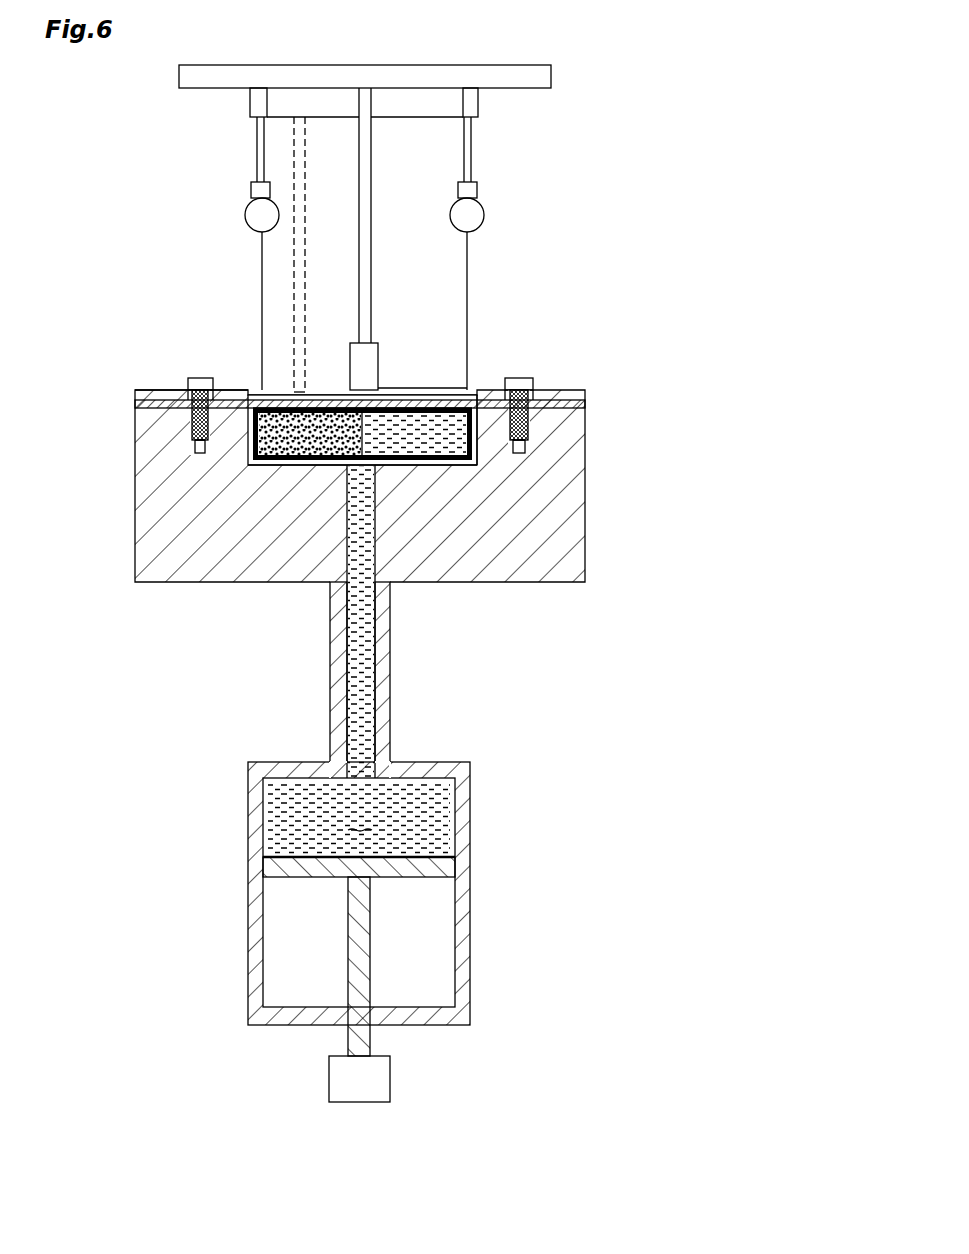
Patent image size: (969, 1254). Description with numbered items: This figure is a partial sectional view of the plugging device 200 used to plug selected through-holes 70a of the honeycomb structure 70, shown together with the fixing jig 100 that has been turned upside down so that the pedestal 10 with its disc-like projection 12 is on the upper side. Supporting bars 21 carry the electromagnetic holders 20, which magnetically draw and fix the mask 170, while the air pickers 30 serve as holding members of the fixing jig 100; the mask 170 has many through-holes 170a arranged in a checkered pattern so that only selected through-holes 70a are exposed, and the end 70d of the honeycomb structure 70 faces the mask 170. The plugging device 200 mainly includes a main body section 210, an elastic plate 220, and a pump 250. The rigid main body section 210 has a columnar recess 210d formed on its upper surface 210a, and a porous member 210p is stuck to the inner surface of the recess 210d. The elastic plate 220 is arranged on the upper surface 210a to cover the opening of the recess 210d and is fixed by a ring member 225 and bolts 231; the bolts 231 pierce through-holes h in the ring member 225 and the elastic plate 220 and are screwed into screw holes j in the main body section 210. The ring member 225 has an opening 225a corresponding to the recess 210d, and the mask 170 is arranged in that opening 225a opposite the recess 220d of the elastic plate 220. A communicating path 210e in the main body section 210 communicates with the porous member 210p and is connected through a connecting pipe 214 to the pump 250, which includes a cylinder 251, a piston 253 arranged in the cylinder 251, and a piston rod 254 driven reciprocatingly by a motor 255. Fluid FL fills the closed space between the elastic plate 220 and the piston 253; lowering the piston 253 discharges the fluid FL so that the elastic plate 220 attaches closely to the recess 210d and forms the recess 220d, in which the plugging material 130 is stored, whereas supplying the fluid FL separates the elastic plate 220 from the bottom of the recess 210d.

The fixing jig 100 is at (597, 222).
The plugging device 200 is at (675, 424).
The pedestal 10 is at (553, 76).
The projection 12 is at (478, 103).
The electromagnetic holder 20 is at (380, 350).
The supporting bar 21 is at (372, 280).
The air picker 30 is at (245, 213).
The honeycomb structure 70 is at (467, 282).
The through-hole 70a is at (303, 294).
The wire end 70d is at (378, 393).
The plugging material 130 is at (330, 410).
The mask 170 is at (250, 390).
The through-hole 170a is at (297, 370).
The main body section 210 is at (585, 483).
The upper surface 210a is at (148, 390).
The recess 210d is at (452, 462).
The communicating path 210e is at (370, 547).
The porous member 210p is at (470, 458).
The connecting pipe 214 is at (390, 687).
The elastic plate 220 is at (585, 401).
The recess 220d is at (283, 465).
The ring member 225 is at (565, 392).
The opening 225a is at (253, 392).
The bolt 231 is at (193, 382).
The through-hole h is at (190, 391).
The screw hole j is at (195, 450).
The pump 250 is at (560, 810).
The cylinder 251 is at (455, 822).
The piston 253 is at (425, 870).
The piston rod 254 is at (370, 930).
The motor 255 is at (390, 1076).
The fluid FL is at (303, 793).